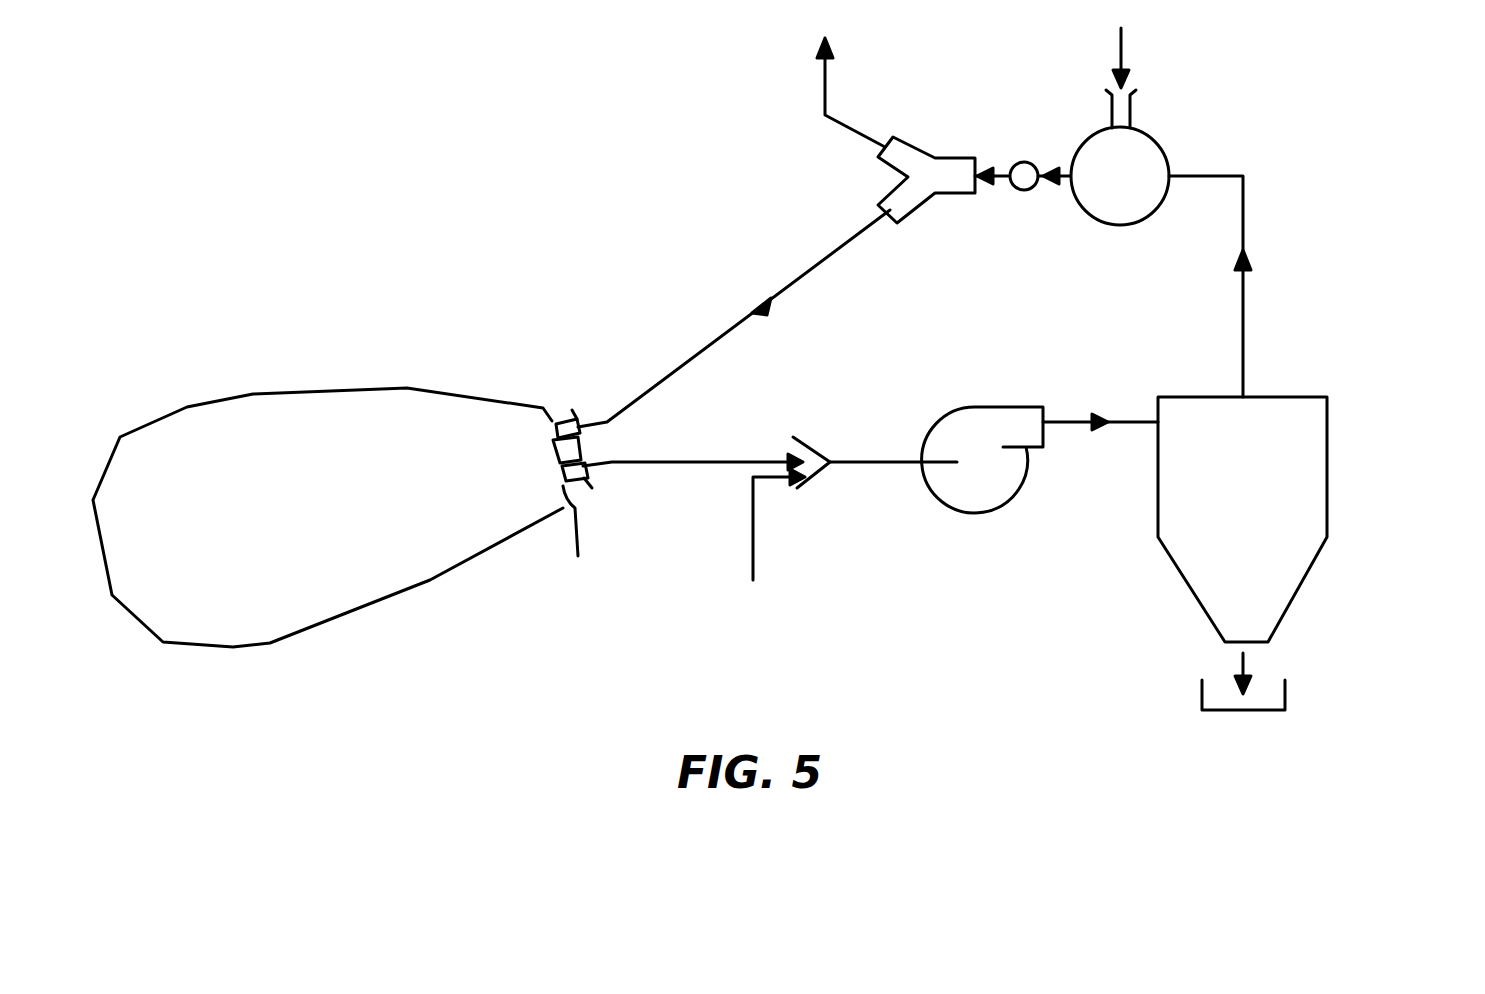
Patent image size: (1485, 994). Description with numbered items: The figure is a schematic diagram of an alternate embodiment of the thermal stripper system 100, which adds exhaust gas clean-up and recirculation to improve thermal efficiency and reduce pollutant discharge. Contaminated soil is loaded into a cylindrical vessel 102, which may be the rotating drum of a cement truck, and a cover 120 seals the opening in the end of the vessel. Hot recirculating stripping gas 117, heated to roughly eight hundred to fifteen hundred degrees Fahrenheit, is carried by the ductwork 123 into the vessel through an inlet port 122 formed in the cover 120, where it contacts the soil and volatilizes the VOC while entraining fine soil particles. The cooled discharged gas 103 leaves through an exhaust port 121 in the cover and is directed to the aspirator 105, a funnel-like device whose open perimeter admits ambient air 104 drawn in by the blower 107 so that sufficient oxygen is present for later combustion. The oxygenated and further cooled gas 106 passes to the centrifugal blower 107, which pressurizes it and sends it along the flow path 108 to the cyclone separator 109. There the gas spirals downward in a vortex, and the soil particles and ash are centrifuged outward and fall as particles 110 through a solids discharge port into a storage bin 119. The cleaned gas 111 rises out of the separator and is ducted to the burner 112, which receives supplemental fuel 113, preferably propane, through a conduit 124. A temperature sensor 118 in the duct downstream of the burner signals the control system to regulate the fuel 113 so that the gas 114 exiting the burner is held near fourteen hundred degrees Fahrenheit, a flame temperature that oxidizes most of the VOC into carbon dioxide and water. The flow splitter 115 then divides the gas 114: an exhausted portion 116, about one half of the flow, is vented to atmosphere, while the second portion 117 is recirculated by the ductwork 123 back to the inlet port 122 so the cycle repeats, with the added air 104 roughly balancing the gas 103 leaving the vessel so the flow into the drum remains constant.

The thermal stripper system 100 is at (1325, 160).
The cylindrical vessel 102 is at (318, 388).
The discharged gas 103 is at (684, 458).
The ambient air 104 is at (758, 548).
The aspirator 105 is at (808, 445).
The oxygenated and further cooled gas 106 is at (897, 463).
The blower 107 is at (1007, 500).
The hot gas flow path arrow 108 is at (1122, 420).
The cyclone separator 109 is at (1330, 465).
The particles 110 is at (1247, 670).
The cleaned gas 111 is at (1248, 325).
The burner 112 is at (1153, 213).
The supplemental fuel 113 is at (1125, 55).
The gas exiting the burner 114 is at (1067, 182).
The flow splitter 115 is at (915, 137).
The exhausted gas portion 116 is at (827, 80).
The hot recirculating stripping gas 117 is at (812, 262).
The temperature sensor 118 is at (1025, 160).
The storage bin 119 is at (1287, 697).
The cover 120 is at (578, 540).
The exhaust port 121 is at (553, 478).
The inlet port 122 is at (550, 432).
The ductwork 123 is at (558, 418).
The conduit 124 is at (1132, 112).